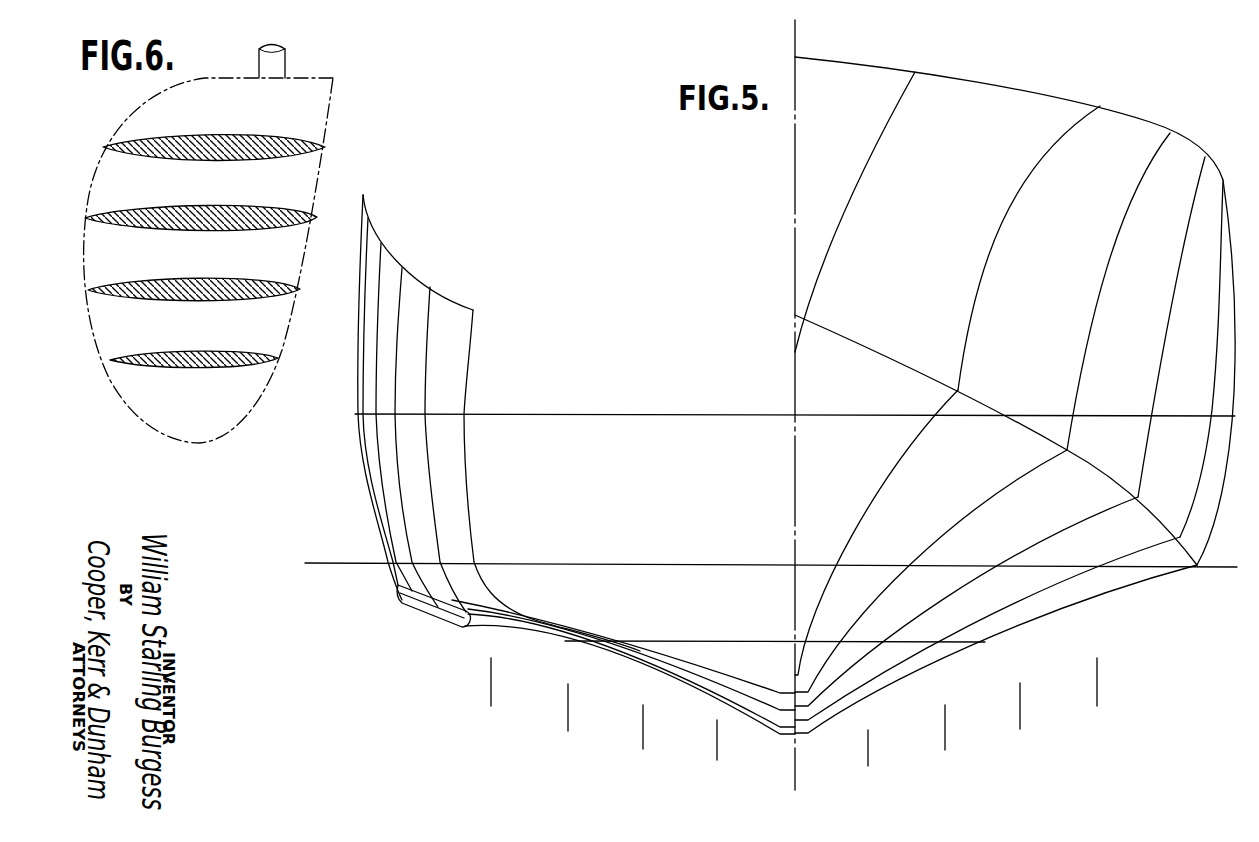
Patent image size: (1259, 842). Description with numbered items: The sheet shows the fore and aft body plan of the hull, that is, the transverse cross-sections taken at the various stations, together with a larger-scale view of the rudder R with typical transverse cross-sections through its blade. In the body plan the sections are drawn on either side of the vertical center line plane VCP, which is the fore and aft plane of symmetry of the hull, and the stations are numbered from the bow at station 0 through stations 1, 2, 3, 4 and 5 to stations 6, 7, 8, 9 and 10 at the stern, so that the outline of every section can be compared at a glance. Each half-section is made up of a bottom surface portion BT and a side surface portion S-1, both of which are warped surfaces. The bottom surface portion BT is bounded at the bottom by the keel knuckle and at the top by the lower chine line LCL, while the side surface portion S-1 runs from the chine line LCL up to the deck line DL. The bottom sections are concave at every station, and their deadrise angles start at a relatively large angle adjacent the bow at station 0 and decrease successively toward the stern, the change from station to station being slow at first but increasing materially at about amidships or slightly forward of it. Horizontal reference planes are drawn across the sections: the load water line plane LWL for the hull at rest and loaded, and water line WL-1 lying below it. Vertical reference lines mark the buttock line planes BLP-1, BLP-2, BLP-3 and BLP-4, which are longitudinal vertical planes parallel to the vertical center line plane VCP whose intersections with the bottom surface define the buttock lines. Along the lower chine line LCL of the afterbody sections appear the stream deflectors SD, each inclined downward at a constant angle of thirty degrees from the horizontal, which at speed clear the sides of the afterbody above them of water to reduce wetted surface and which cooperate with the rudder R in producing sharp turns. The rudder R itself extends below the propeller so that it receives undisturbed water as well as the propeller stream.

In FIG. 6, the rudder R is at (183, 425).
In FIG. 5, the vertical center line plane VCP is at (793, 232).
In FIG. 5, the deck line DL is at (428, 286).
In FIG. 5, the lower chine line LCL is at (906, 356).
In FIG. 5, the load water line plane LWL is at (642, 564).
In FIG. 5, the water line minus one WL-1 is at (708, 642).
In FIG. 5, the stream deflector SD is at (432, 616).
In FIG. 5, the side surface portion S-1 is at (1029, 248).
In FIG. 5, the bottom surface portion BT is at (931, 571).
In FIG. 5, the buttock line plane BLP-1 is at (792, 752).
In FIG. 5, the buttock line plane BLP-2 is at (794, 739).
In FIG. 5, the buttock line plane BLP-3 is at (795, 719).
In FIG. 5, the buttock line plane BLP-4 is at (795, 695).
In FIG. 5, the station 0 is at (855, 212).
In FIG. 5, the station 1 is at (947, 390).
In FIG. 5, the station 2 is at (982, 412).
In FIG. 5, the station 3 is at (1000, 431).
In FIG. 5, the station 4 is at (1009, 451).
In FIG. 5, the station 5 is at (362, 250).
In FIG. 5, the station 6 is at (371, 401).
In FIG. 5, the station 7 is at (388, 417).
In FIG. 5, the station 8 is at (410, 437).
In FIG. 5, the station 9 is at (438, 449).
In FIG. 5, the station 10 is at (541, 480).